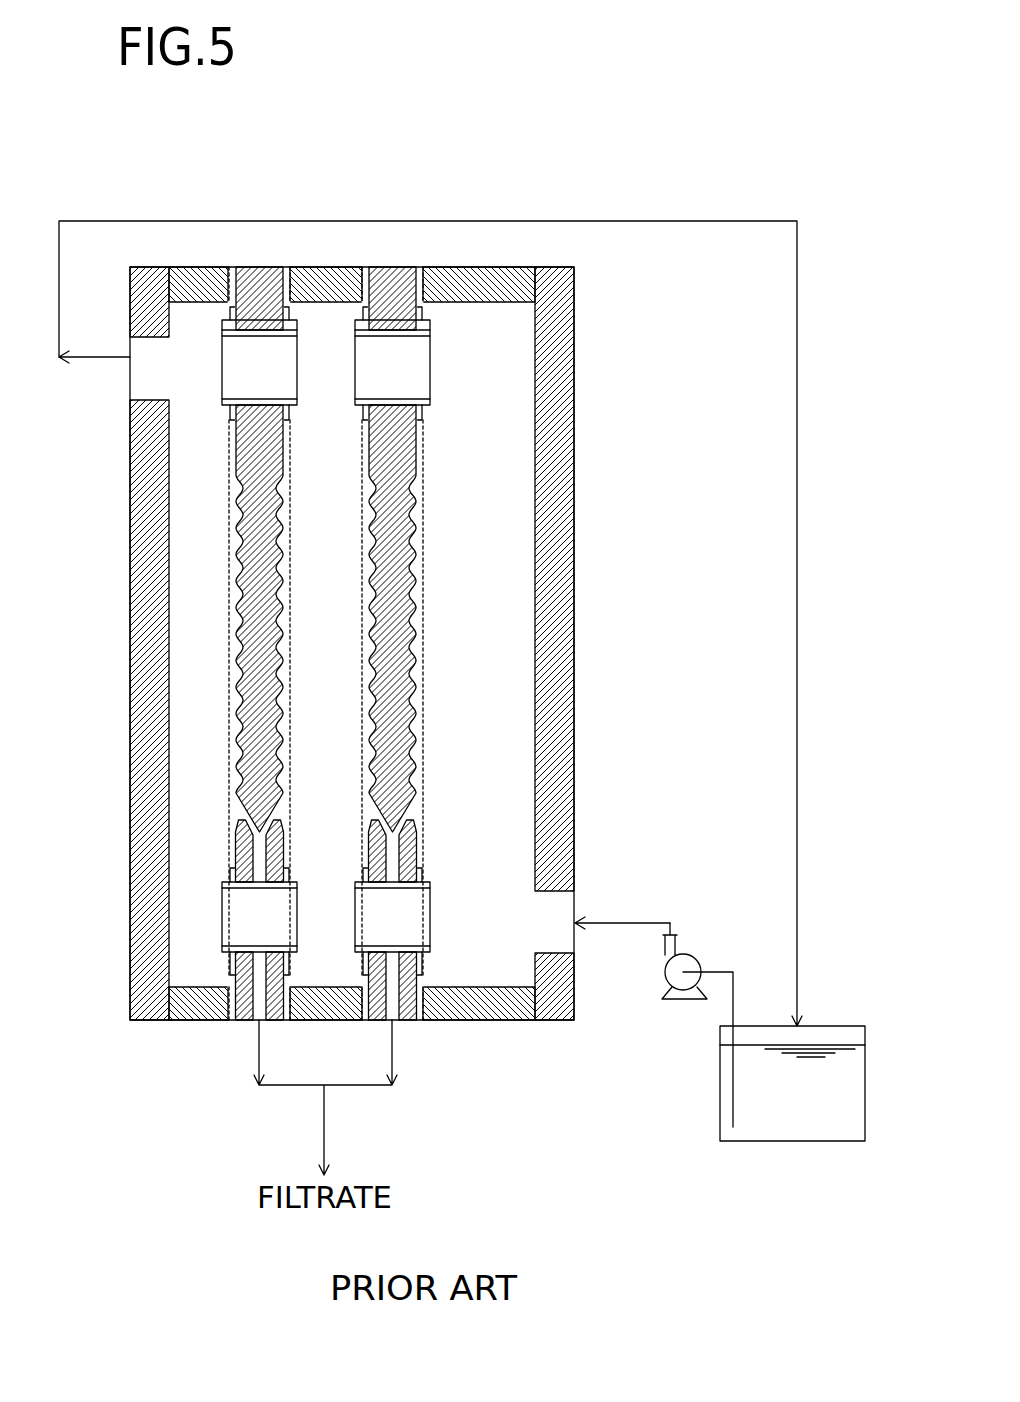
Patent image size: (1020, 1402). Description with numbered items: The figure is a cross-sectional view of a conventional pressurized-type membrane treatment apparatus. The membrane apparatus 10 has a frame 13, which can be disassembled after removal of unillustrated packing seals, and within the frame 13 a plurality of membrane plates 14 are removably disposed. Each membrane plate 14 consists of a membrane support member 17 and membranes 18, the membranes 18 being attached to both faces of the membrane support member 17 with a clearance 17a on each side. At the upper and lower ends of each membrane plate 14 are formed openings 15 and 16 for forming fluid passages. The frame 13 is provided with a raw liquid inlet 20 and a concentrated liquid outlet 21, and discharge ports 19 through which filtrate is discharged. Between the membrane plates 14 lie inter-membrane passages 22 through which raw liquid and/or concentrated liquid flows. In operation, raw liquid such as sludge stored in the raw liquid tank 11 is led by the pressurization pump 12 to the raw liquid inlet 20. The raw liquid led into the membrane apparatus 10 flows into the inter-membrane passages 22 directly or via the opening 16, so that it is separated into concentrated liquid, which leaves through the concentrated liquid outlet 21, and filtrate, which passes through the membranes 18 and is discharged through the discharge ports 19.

The membrane apparatus 10 is at (610, 547).
The raw liquid tank 11 is at (720, 1122).
The pressurization pump 12 is at (684, 964).
The frame 13 is at (129, 660).
The membrane plate 14 is at (259, 280).
The opening 15 is at (222, 387).
The opening 16 is at (432, 922).
The membrane support member 17 is at (240, 633).
The clearance 17a is at (233, 697).
The membrane 18 is at (228, 767).
The discharge port 19 is at (254, 1019).
The raw liquid inlet 20 is at (563, 938).
The concentrated liquid outlet 21 is at (128, 382).
The inter-membrane passage 22 is at (178, 537).